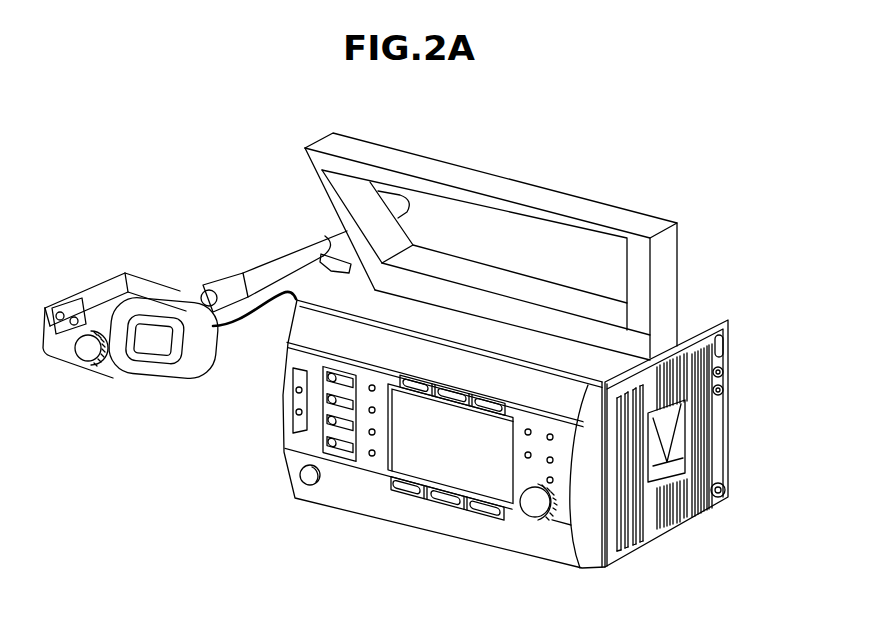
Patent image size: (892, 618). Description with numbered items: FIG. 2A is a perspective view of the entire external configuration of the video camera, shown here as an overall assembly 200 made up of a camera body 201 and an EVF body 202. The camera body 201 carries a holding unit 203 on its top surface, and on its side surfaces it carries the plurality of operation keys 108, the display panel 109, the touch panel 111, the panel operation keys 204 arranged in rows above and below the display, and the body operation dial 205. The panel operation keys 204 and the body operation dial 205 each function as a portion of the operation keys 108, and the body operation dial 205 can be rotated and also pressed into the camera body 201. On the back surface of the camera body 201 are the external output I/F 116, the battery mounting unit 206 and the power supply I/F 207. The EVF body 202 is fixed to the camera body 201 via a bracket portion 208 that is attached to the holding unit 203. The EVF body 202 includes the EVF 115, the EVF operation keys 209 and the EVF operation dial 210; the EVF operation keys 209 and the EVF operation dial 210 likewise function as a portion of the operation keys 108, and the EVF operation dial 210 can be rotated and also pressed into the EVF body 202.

The image pickup system 200 is at (243, 113).
The camera body 201 is at (286, 167).
The EVF body 202 is at (115, 238).
The holding unit 203 is at (487, 182).
The panel operation keys 204 is at (487, 400).
The body operation dial 205 is at (530, 508).
The battery mounting unit 206 is at (667, 503).
The power supply I/F 207 is at (719, 499).
The bracket portion 208 is at (262, 262).
The EVF operation keys 209 is at (78, 317).
The EVF operation dial 210 is at (86, 360).
The operation key 108 is at (295, 392).
The display panel 109 is at (398, 447).
The touch panel 111 is at (405, 467).
The electronic viewfinder (EVF) 115 is at (152, 352).
The external output interface (I/F) 116 is at (728, 345).